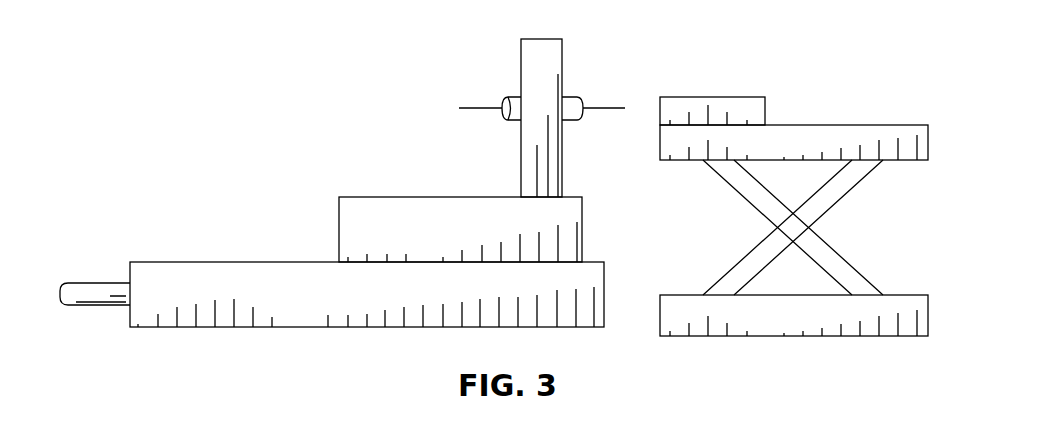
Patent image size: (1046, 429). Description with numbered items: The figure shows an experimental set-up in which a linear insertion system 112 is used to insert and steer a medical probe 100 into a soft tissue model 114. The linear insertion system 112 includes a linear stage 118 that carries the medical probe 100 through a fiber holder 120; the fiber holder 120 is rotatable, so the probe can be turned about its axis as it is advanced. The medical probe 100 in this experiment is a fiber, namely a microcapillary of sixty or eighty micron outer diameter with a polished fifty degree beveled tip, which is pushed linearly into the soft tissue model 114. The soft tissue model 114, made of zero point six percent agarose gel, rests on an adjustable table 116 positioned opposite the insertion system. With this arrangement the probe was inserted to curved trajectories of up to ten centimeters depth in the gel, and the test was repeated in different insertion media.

The medical probe 100 is at (601, 102).
The linear insertion system 112 is at (386, 56).
The soft tissue model 114 is at (705, 100).
The adjustable table 116 is at (893, 128).
The linear stage 118 is at (363, 186).
The fiber holder 120 is at (512, 98).